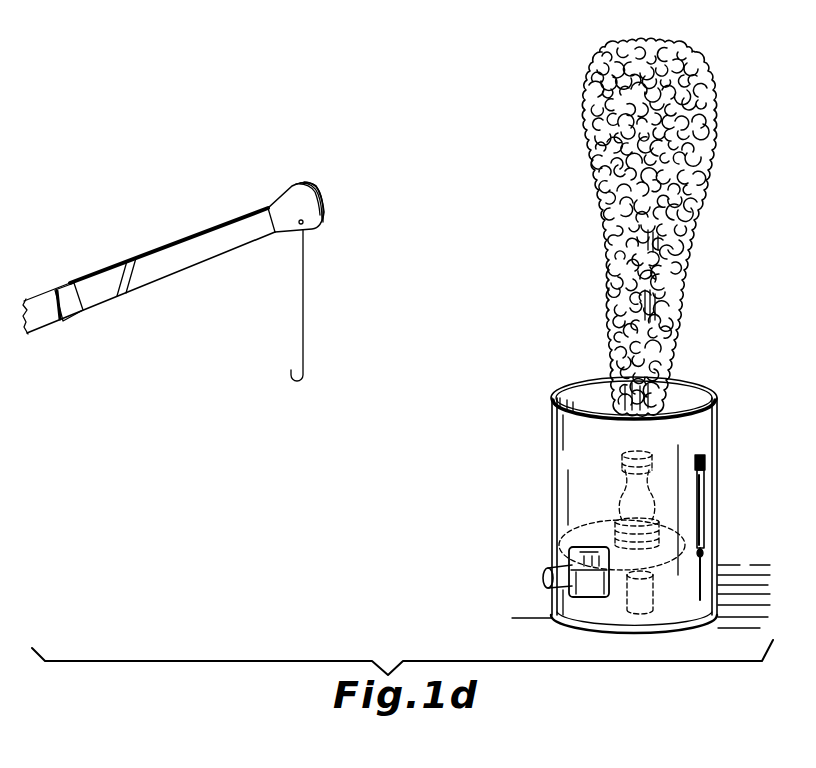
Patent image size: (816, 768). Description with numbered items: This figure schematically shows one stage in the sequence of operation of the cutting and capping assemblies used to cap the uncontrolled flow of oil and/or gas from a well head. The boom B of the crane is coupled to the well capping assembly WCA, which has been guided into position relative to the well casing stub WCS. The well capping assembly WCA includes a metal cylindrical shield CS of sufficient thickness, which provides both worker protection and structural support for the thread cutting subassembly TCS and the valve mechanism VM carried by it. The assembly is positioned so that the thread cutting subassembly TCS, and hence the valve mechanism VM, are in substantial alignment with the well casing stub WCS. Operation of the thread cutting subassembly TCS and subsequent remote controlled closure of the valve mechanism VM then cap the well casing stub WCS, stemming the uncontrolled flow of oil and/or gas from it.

The boom B is at (178, 226).
The cylindrical shield CS is at (601, 449).
The valve mechanism VM is at (651, 476).
The thread cutting subassembly TCS is at (660, 530).
The well capping assembly WCA is at (540, 503).
The well casing stub WCS is at (653, 600).